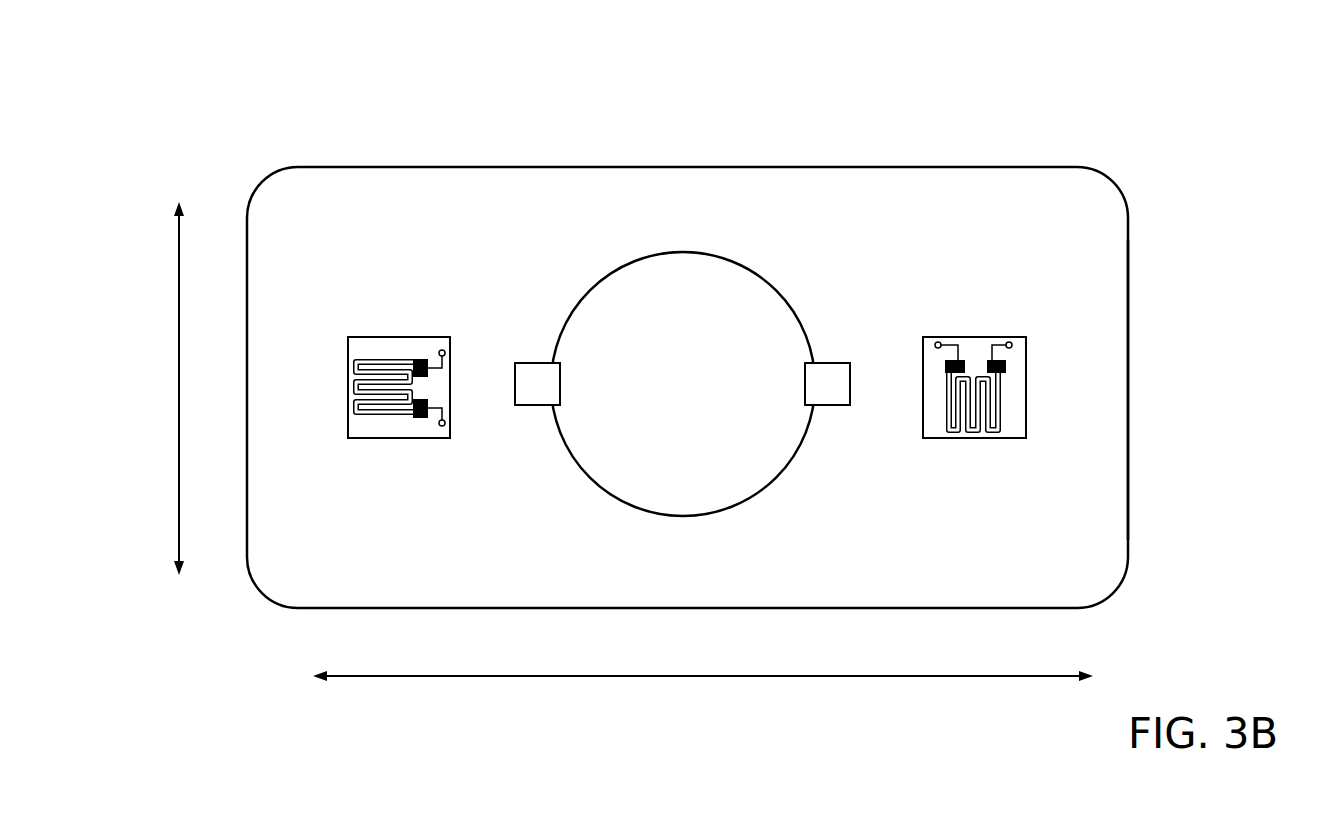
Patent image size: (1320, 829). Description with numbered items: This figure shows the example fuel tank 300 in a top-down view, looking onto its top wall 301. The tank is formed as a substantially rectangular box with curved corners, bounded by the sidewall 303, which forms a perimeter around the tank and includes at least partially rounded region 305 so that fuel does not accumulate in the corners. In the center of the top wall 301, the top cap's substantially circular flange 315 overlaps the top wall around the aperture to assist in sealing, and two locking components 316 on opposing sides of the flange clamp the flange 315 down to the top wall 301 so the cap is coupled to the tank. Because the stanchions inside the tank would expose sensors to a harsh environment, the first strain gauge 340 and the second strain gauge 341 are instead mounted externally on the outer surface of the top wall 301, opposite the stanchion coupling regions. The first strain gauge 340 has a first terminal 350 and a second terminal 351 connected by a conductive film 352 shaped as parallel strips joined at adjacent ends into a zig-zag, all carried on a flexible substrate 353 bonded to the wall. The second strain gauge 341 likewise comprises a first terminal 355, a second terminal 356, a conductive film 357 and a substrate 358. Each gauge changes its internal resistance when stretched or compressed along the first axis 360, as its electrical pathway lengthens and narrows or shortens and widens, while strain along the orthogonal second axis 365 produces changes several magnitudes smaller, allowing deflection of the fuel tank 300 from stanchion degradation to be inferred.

The fuel tank 300 is at (1096, 74).
The top wall 301 is at (886, 533).
The sidewall 303 is at (1128, 331).
The rounded region of sidewall 305 is at (1105, 177).
The flange 315 is at (683, 384).
The locking components 316 is at (682, 384).
The first strain gauge 340 is at (397, 390).
The second strain gauge 341 is at (982, 390).
The first terminal 350 is at (445, 352).
The second terminal 351 is at (445, 424).
The conductive film 352 is at (381, 348).
The flexible substrate 353 is at (365, 430).
The first terminal 355 is at (951, 341).
The second terminal 356 is at (998, 341).
The conductive film 357 is at (932, 410).
The substrate 358 is at (1015, 428).
The first axis 360 is at (692, 677).
The second axis 365 is at (178, 353).